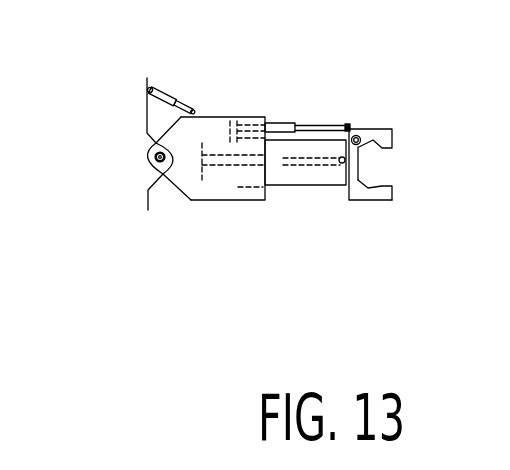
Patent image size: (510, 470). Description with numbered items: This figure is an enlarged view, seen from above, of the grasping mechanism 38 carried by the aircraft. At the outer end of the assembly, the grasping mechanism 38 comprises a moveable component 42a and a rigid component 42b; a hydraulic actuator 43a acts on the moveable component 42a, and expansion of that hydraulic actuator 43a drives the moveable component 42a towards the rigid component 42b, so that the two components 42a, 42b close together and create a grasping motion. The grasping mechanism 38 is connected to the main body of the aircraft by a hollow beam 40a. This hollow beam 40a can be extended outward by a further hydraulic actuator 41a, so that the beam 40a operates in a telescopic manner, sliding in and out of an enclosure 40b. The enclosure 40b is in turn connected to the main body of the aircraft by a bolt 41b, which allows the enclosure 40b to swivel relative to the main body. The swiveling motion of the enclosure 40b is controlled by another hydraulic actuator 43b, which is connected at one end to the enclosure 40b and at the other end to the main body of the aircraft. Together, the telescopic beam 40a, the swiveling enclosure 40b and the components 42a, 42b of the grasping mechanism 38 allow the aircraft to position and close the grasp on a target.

The grasping mechanism 38 is at (399, 191).
The hollow beam 40a is at (278, 178).
The enclosure 40b is at (195, 193).
The hydraulic actuator 41a is at (297, 160).
The bolt 41b is at (156, 143).
The moveable component 42a is at (379, 129).
The rigid component 42b is at (373, 192).
The hydraulic actuator 43a is at (293, 128).
The hydraulic actuator 43b is at (167, 92).